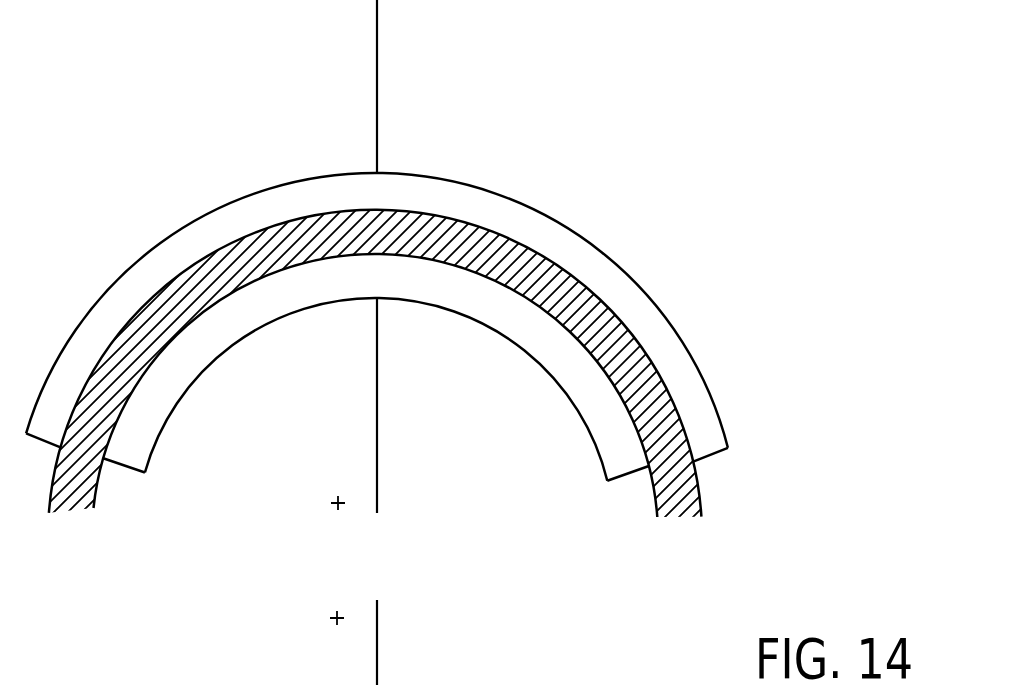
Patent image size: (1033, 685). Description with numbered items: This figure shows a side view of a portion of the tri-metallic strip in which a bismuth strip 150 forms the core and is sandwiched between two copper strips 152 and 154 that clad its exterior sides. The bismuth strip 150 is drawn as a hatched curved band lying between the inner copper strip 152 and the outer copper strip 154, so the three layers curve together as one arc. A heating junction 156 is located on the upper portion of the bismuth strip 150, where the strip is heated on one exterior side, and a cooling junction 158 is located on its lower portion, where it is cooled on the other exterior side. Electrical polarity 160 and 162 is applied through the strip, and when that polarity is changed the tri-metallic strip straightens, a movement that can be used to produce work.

The bismuth strip 150 is at (698, 490).
The copper strip 152 is at (555, 345).
The copper strip 154 is at (645, 320).
The heating junction 156 is at (455, 221).
The cooling junction 158 is at (264, 279).
The electrical polarity 160 is at (355, 0).
The electrical polarity 162 is at (336, 506).